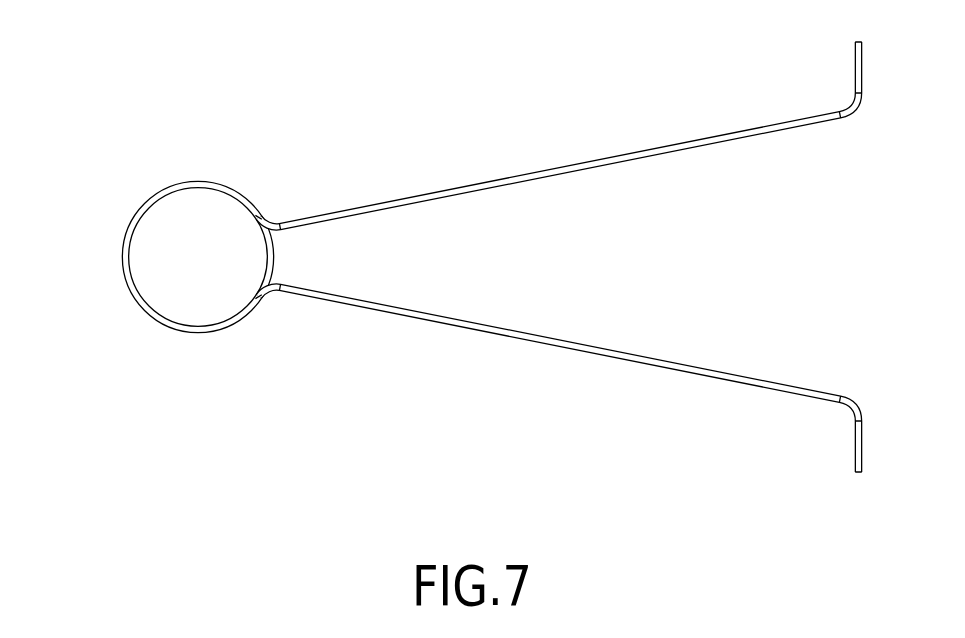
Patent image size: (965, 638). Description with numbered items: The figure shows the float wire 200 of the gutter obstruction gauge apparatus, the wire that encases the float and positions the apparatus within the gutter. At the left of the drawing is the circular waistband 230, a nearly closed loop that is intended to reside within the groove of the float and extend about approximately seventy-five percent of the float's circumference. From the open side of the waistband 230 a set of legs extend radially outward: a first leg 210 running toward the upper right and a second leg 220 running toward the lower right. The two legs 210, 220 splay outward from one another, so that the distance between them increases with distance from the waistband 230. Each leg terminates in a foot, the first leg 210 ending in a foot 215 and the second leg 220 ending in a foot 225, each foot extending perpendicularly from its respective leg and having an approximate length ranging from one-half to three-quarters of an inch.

The float wire 200 is at (491, 238).
The first leg 210 is at (520, 175).
The foot 215 is at (867, 72).
The second leg 220 is at (482, 335).
The foot 225 is at (868, 442).
The circular waistband 230 is at (130, 303).